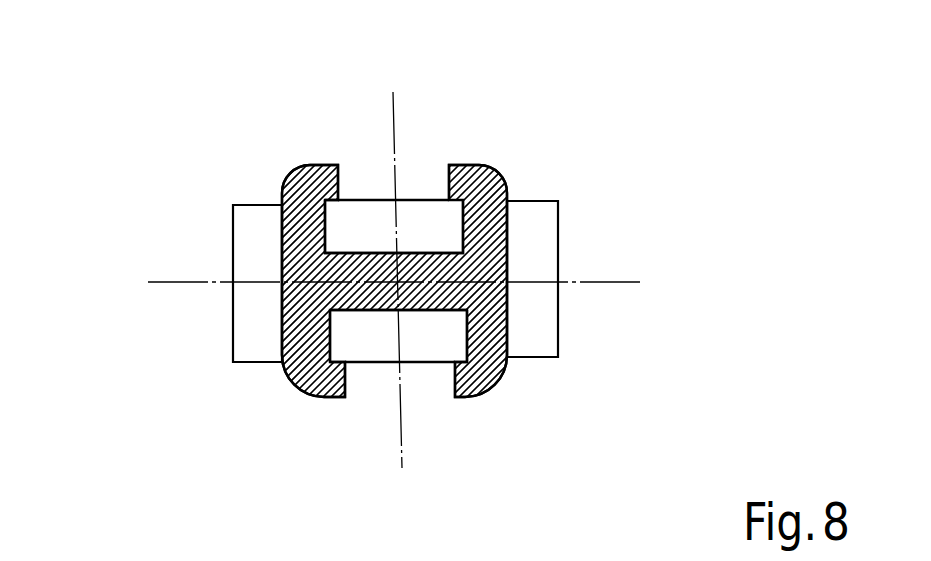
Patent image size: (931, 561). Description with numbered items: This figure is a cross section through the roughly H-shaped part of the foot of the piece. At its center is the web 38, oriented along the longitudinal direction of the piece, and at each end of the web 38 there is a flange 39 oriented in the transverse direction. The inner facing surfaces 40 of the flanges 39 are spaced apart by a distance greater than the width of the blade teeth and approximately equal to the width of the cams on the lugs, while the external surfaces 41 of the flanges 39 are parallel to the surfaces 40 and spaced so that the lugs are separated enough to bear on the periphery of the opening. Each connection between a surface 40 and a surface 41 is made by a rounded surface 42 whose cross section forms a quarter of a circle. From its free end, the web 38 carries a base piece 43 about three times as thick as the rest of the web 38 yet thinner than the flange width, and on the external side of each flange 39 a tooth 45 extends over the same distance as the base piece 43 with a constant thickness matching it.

The web 38 is at (396, 290).
The flange 39 is at (288, 328).
The facing surfaces 40 is at (333, 232).
The external surfaces 41 is at (270, 297).
The rounded surface 42 is at (284, 174).
The base piece 43 is at (420, 212).
The tooth 45 is at (257, 240).